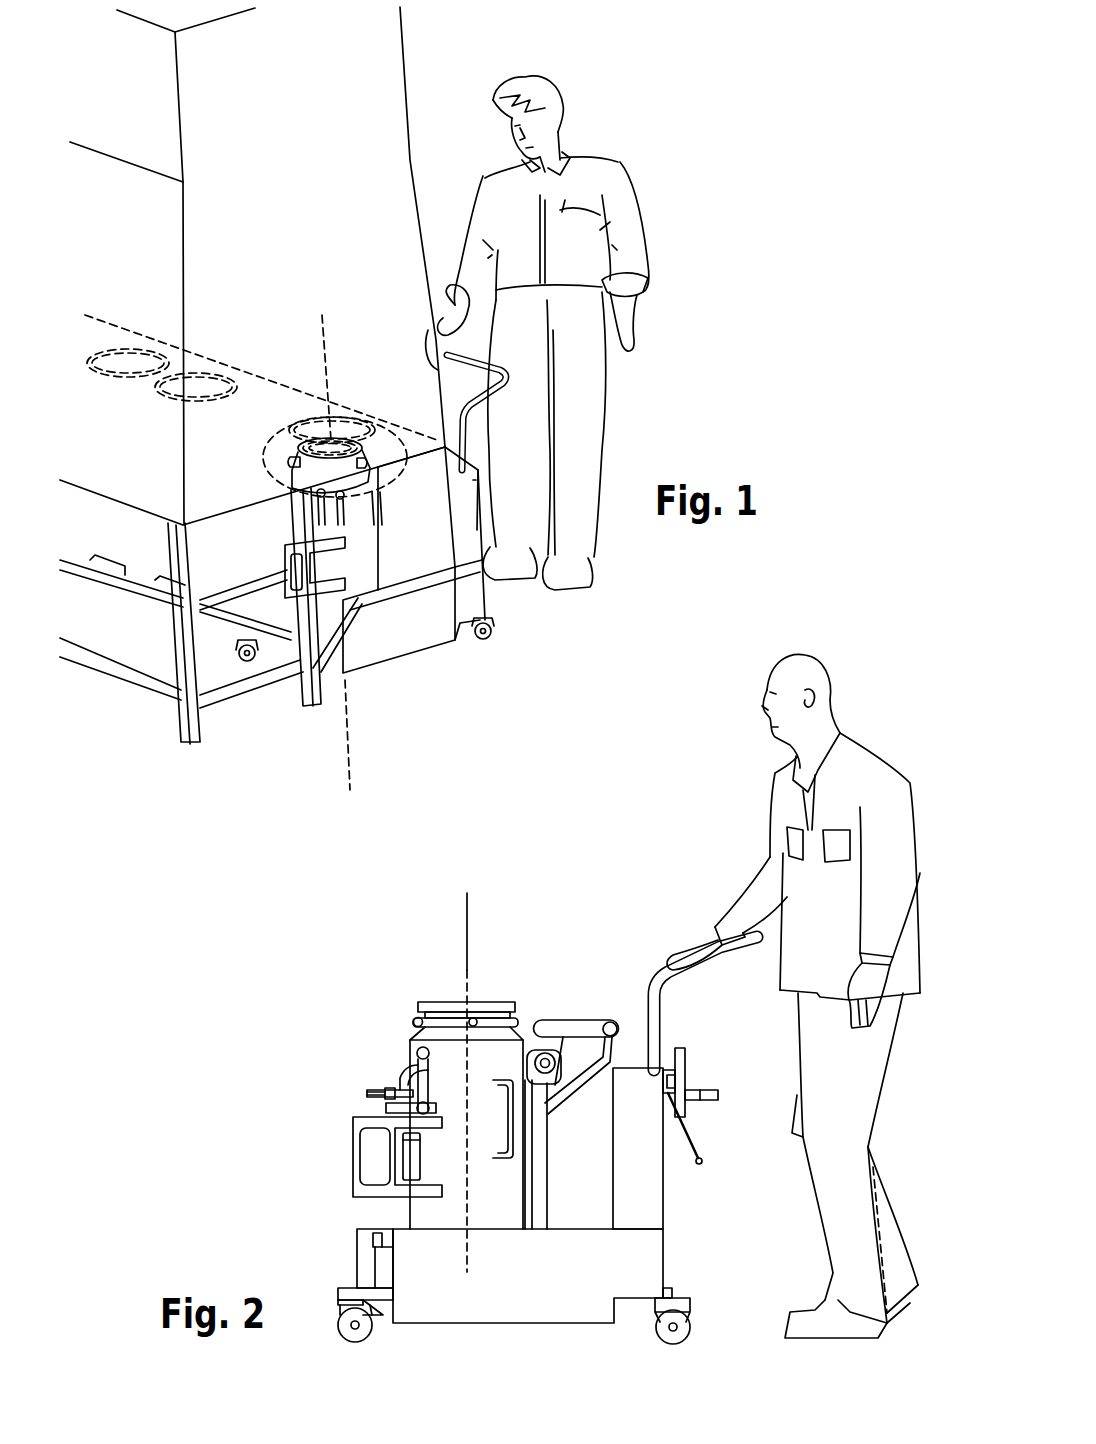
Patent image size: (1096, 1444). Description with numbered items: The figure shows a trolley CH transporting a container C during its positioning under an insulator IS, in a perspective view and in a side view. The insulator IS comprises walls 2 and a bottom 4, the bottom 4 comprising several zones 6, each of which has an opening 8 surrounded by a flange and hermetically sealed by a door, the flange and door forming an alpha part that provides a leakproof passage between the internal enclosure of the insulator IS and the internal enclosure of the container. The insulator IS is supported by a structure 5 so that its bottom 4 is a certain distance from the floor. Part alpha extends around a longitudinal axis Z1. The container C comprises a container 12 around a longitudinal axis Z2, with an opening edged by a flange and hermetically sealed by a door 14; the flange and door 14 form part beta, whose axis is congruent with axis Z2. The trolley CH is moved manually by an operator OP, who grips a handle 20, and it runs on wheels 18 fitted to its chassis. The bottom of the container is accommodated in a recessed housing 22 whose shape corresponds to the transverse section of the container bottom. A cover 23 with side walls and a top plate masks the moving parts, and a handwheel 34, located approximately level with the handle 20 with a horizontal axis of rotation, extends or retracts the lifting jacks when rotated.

In FIG. 1, the insulator IS is at (438, 65).
In FIG. 1, the operator OP is at (616, 123).
In FIG. 1, the walls 2 is at (372, 168).
In FIG. 1, the bottom 4 is at (130, 506).
In FIG. 1, the structure 5 is at (178, 645).
In FIG. 1, the zones 6 is at (165, 404).
In FIG. 1, the opening 8 is at (347, 430).
In FIG. 1, the longitudinal axis Z1 is at (322, 330).
In FIG. 1, the longitudinal axis Z2 is at (345, 772).
In FIG. 2, the longitudinal axis Z2 is at (465, 912).
In FIG. 1, the container C is at (372, 602).
In FIG. 2, the container C is at (332, 1215).
In FIG. 1, the trolley CH is at (384, 686).
In FIG. 2, the trolley CH is at (496, 1347).
In FIG. 1, the recessed housing 22 is at (382, 595).
In FIG. 2, the container 12 is at (492, 1208).
In FIG. 2, the door 14 is at (485, 998).
In FIG. 2, the handle 20 is at (665, 970).
In FIG. 2, the cover 23 is at (625, 1262).
In FIG. 2, the wheels 18 is at (690, 1325).
In FIG. 2, the handwheel 34 is at (708, 1100).